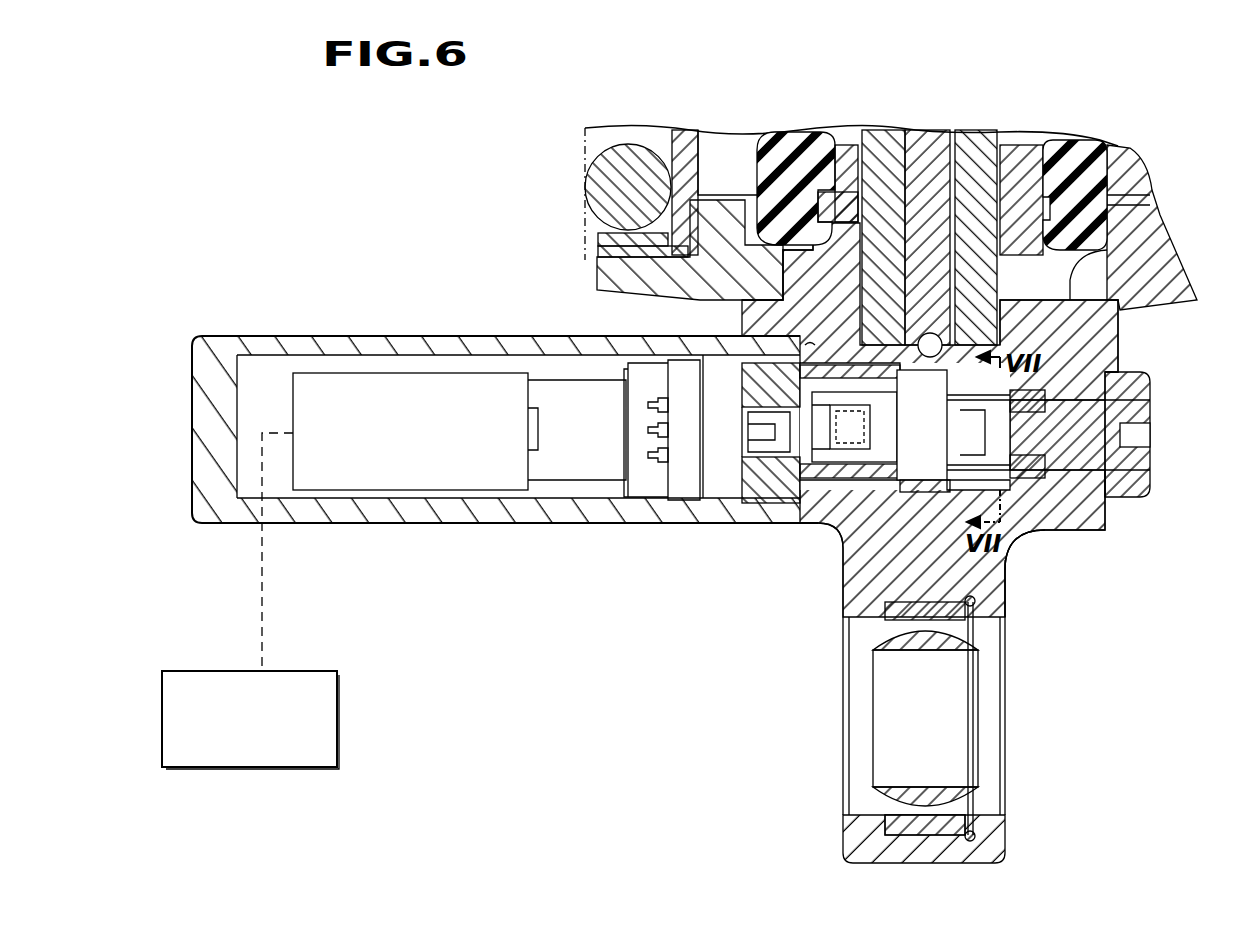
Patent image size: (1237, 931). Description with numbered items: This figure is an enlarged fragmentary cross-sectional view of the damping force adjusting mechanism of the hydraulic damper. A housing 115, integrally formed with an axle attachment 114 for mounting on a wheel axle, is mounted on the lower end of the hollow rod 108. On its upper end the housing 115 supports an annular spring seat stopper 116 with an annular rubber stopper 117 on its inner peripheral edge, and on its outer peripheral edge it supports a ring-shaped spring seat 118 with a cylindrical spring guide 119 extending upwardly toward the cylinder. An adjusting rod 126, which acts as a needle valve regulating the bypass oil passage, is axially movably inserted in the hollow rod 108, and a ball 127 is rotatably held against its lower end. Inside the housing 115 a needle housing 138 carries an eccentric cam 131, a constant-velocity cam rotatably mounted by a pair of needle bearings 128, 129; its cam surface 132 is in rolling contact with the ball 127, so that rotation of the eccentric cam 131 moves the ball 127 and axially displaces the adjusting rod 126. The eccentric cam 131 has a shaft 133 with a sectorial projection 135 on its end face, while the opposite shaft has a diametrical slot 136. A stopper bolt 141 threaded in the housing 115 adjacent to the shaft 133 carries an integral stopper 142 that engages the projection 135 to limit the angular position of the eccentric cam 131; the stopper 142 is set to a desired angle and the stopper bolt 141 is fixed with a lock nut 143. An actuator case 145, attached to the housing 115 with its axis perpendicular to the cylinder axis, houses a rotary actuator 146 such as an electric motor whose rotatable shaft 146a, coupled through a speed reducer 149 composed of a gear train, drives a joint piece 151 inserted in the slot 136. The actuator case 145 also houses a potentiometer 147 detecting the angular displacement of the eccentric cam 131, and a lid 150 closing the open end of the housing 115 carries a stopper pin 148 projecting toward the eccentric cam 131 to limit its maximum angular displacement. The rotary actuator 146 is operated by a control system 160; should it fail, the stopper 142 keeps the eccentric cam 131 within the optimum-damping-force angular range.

The hollow rod 108 is at (985, 145).
The axle attachment 114 is at (990, 850).
The housing 115 is at (1112, 345).
The annular spring seat stopper 116 is at (605, 265).
The annular rubber stopper 117 is at (790, 140).
The ring-shaped spring seat 118 is at (598, 238).
The cylindrical spring guide 119 is at (598, 251).
The adjusting rod 126 is at (928, 150).
The ball 127 is at (1015, 332).
The needle bearing 128 is at (1022, 462).
The needle bearing 129 is at (905, 472).
The eccentric cam 131 is at (912, 490).
The cam surface 132 is at (965, 573).
The shaft 133 is at (1018, 478).
The projection 135 is at (1085, 541).
The slot 136 is at (775, 490).
The needle housing 138 is at (840, 478).
The stopper bolt 141 is at (1140, 412).
The stopper 142 is at (1148, 458).
The lock nut 143 is at (1148, 492).
The actuator case 145 is at (408, 514).
The rotary actuator 146 is at (502, 460).
The rotatable shaft 146a is at (733, 445).
The potentiometer 147 is at (687, 435).
The stopper pin 148 is at (815, 322).
The speed reducer 149 is at (568, 470).
The lid 150 is at (862, 470).
The joint piece 151 is at (835, 450).
The control system 160 is at (330, 768).